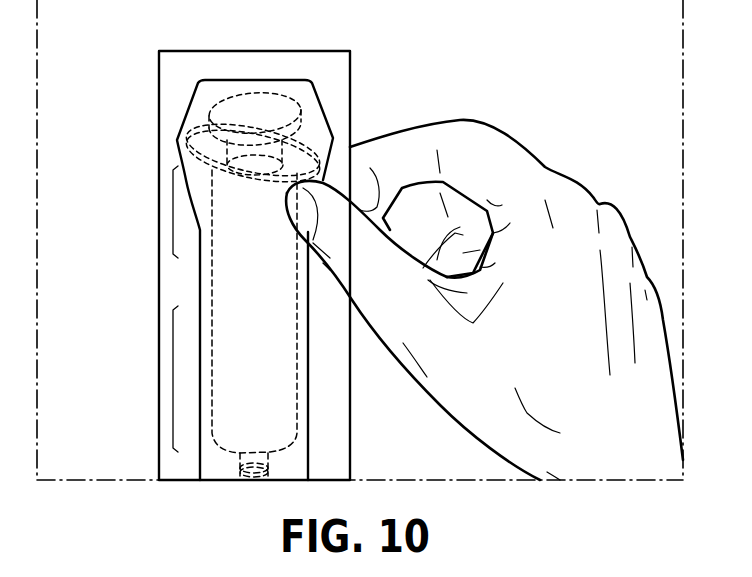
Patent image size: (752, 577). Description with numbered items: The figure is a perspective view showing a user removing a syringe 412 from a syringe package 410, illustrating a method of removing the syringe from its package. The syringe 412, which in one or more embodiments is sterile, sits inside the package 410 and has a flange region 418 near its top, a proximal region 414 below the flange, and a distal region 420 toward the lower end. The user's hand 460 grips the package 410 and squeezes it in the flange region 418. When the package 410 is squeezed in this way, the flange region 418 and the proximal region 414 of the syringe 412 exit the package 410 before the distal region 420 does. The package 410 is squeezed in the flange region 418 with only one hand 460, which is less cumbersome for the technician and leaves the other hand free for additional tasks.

The package 410 is at (383, 73).
The syringe 412 is at (211, 267).
The proximal region 414 is at (173, 216).
The flange region 418 is at (297, 170).
The distal region 420 is at (173, 382).
The hand 460 is at (510, 158).